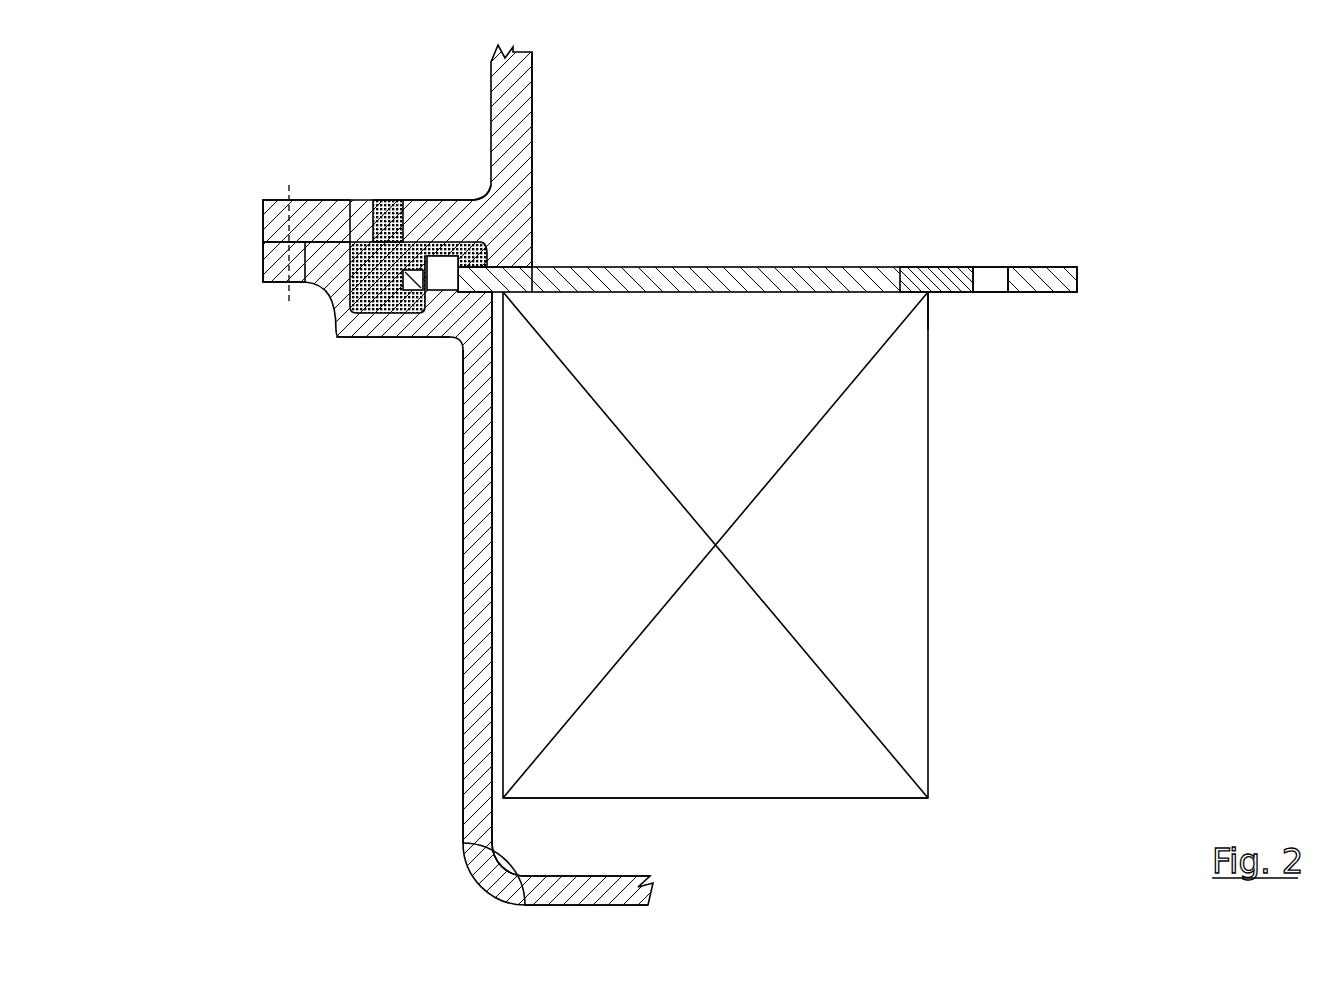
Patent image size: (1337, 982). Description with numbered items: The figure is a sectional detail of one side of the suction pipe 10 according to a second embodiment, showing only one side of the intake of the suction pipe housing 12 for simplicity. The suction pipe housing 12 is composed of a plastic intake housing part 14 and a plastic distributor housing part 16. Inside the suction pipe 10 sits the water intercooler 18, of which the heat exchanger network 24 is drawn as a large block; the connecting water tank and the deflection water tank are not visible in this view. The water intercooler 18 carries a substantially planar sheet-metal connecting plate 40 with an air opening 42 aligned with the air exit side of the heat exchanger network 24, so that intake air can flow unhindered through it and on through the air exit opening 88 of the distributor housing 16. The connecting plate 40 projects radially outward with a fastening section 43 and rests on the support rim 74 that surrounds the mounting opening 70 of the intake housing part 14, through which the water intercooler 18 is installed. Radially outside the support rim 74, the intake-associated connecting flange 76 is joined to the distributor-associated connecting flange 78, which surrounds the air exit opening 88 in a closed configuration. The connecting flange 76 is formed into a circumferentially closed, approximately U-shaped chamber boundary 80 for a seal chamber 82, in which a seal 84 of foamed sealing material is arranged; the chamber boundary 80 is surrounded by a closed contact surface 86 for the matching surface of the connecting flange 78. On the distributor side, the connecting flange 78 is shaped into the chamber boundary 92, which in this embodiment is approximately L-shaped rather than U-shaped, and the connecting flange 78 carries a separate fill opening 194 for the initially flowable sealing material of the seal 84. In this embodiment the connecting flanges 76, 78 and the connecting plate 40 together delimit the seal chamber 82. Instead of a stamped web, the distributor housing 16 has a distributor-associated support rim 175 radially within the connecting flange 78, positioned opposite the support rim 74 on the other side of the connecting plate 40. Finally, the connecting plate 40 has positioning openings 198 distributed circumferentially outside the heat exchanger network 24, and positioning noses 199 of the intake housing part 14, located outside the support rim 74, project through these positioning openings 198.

The suction pipe 10 is at (202, 88).
The suction pipe housing 12 is at (450, 541).
The intake housing part 14 is at (477, 838).
The distributor housing part 16 is at (522, 65).
The water intercooler 18 is at (934, 666).
The heat exchanger network 24 is at (762, 672).
The connecting plate 40 is at (950, 275).
The air opening 42 is at (801, 278).
The fastening section 43 is at (1066, 258).
The mounting opening 70 is at (943, 300).
The support rim 74 is at (474, 296).
The intake-associated connecting flange 76 is at (256, 266).
The distributor-associated connecting flange 78 is at (256, 212).
The chamber boundary 80 is at (367, 283).
The seal chamber 82 is at (380, 314).
The seal 84 is at (347, 330).
The contact surface 86 is at (263, 242).
The air exit opening 88 is at (542, 242).
The distributor-associated chamber boundary 92 is at (421, 200).
The distributor-associated support rim 175 is at (522, 265).
The fill opening 194 is at (386, 198).
The positioning opening 198 is at (993, 278).
The positioning nose 199 is at (450, 275).